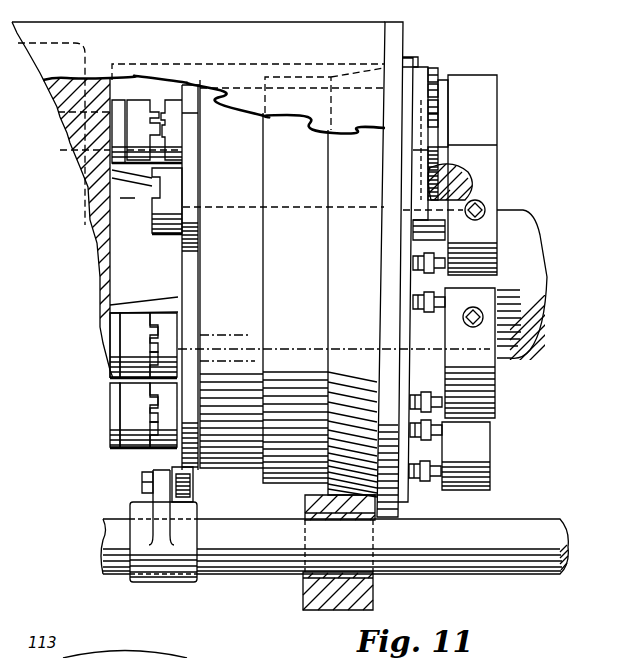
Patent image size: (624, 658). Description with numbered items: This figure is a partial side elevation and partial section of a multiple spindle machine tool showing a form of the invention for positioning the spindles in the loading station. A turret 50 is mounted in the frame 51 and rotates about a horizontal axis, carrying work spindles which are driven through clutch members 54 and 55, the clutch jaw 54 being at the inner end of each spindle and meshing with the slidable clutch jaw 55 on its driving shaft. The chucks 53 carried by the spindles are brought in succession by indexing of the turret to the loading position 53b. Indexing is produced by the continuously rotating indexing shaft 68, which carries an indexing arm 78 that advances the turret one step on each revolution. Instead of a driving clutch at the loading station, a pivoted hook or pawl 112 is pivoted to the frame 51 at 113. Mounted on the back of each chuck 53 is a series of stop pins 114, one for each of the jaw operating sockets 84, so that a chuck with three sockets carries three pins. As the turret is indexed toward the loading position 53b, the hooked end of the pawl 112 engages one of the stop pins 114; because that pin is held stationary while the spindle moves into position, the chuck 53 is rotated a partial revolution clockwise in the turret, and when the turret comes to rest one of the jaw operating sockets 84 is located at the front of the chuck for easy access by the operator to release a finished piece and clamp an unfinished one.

The turret 50 is at (296, 133).
The frame 51 is at (356, 41).
The chuck 53 is at (483, 262).
The loading position 53b is at (482, 191).
The clutch jaw 54 is at (170, 190).
The slidable clutch jaw 55 is at (139, 104).
The indexing shaft 68 is at (334, 546).
The indexing arm 78 is at (143, 489).
The jaw operating socket 84 is at (486, 216).
The pawl 112 is at (427, 100).
The pivot 113 is at (437, 72).
The stop pin 114 is at (423, 187).